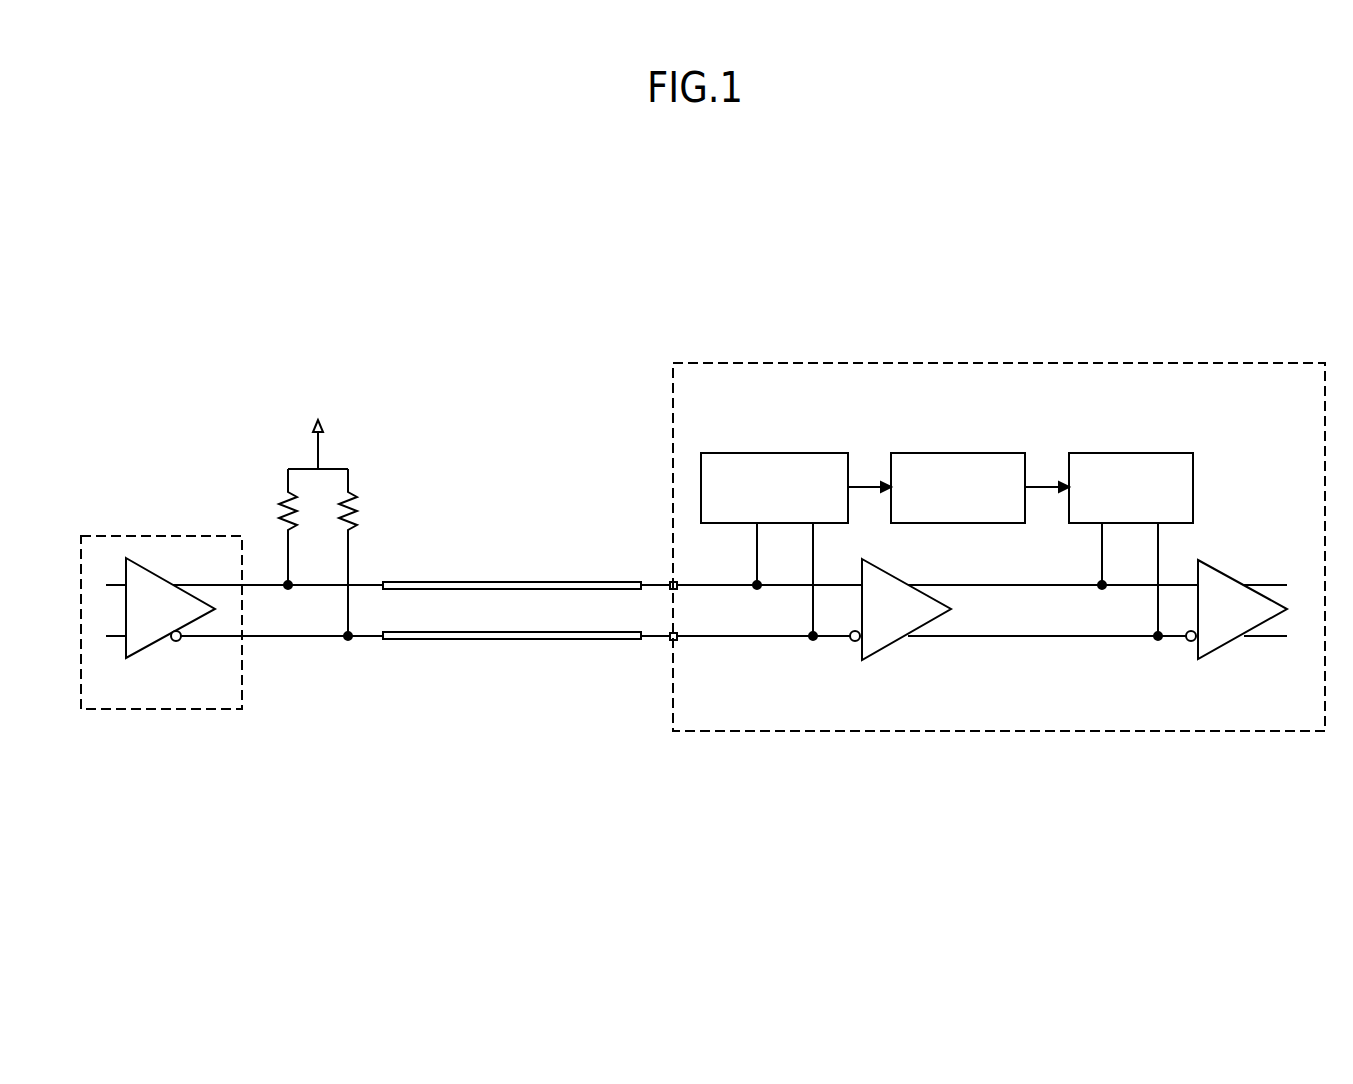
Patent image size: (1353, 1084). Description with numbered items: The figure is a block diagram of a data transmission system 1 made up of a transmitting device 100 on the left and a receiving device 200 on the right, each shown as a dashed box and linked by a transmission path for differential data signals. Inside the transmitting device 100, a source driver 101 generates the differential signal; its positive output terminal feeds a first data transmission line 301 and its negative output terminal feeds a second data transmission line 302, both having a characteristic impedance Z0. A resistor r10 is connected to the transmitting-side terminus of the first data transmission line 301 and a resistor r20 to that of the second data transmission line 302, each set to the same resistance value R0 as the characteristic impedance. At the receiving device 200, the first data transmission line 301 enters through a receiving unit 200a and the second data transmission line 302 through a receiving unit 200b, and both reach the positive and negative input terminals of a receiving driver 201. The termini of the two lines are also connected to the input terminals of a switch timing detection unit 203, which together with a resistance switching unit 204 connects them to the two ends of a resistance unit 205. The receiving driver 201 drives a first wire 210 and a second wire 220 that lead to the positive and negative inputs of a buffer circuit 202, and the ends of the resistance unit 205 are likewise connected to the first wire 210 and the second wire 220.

The data transmission system 1 is at (1155, 241).
The transmitting device 100 is at (165, 536).
The source driver 101 is at (151, 648).
The resistor r10 is at (265, 529).
The resistor r20 is at (373, 554).
The first data transmission line 301 is at (513, 582).
The second data transmission line 302 is at (513, 640).
The receiving unit 200a is at (669, 581).
The receiving unit 200b is at (669, 641).
The receiving device 200 is at (1043, 362).
The first wire 210 is at (1020, 583).
The second wire 220 is at (1020, 639).
The switch timing detection unit 203 is at (814, 453).
The resistance switching unit 204 is at (1006, 453).
The resistance unit 205 is at (1169, 453).
The receiving driver 201 is at (893, 645).
The buffer circuit 202 is at (1228, 645).